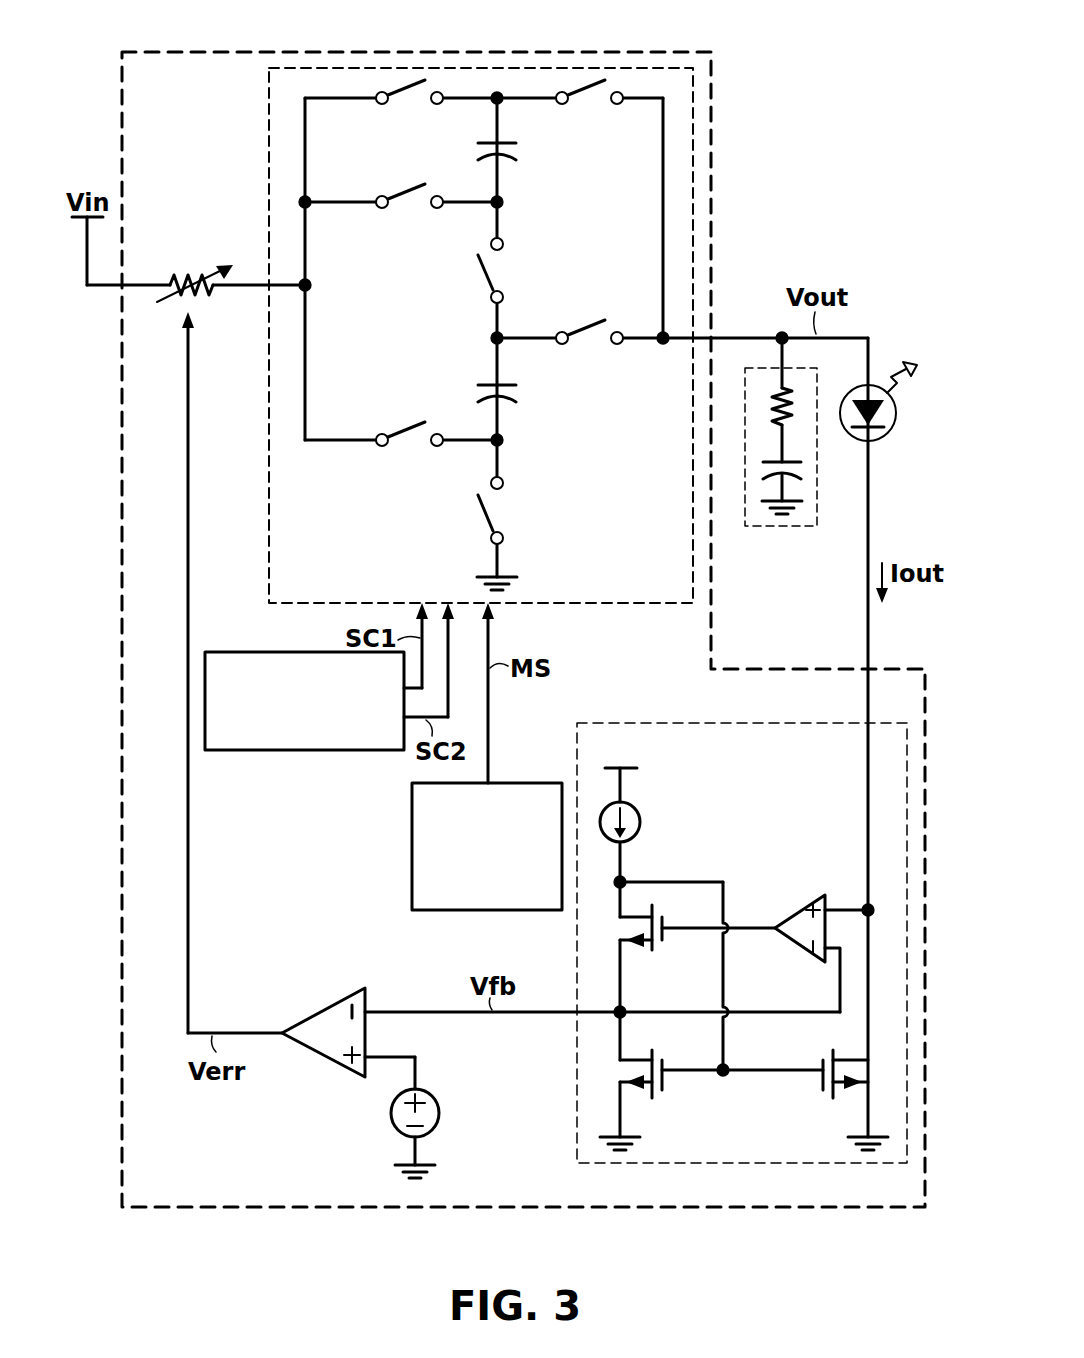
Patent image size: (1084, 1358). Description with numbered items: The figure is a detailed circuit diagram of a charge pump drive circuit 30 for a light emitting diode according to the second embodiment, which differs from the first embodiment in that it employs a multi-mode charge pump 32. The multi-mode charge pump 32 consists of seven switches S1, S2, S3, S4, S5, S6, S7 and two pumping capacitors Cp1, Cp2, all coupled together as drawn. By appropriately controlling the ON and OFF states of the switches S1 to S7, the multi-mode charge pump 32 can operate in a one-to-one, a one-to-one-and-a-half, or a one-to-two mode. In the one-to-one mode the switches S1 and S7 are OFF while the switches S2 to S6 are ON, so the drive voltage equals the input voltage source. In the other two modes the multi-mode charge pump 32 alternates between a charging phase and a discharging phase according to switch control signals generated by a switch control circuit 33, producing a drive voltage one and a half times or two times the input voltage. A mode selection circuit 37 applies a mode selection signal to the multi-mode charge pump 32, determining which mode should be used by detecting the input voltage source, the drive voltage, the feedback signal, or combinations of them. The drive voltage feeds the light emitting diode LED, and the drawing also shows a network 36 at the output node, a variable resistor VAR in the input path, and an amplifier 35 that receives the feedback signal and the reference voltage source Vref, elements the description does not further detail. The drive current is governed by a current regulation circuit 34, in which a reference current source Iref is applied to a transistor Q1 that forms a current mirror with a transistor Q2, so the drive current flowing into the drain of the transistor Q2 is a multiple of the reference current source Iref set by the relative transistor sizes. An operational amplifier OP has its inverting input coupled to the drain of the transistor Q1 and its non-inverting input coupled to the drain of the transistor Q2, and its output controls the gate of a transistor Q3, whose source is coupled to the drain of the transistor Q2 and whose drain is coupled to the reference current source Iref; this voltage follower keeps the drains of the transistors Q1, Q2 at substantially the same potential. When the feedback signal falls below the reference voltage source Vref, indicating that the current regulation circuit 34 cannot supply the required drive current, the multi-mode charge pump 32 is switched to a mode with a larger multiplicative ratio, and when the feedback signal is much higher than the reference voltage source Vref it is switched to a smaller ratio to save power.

The charge pump drive circuit 30 is at (162, 50).
The multi-mode charge pump 32 is at (590, 605).
The switch control circuit 33 is at (272, 752).
The current regulation circuit 34 is at (660, 722).
The error amplifier 35 is at (320, 1057).
The output load RC network 36 is at (780, 528).
The mode selection circuit 37 is at (410, 875).
The switch S1 is at (396, 446).
The switch S2 is at (396, 104).
The switch S3 is at (576, 104).
The switch S4 is at (396, 208).
The switch S5 is at (496, 282).
The switch S6 is at (576, 344).
The switch S7 is at (496, 522).
The pumping capacitor Cp1 is at (514, 400).
The pumping capacitor Cp2 is at (514, 158).
The variable resistor VAR is at (194, 273).
The light emitting diode LED is at (884, 430).
The reference current source Iref is at (649, 815).
The reference voltage source Vref is at (440, 1116).
The operational amplifier OP is at (797, 912).
The transistor Q1 is at (658, 1092).
The transistor Q2 is at (828, 1092).
The transistor Q3 is at (658, 945).